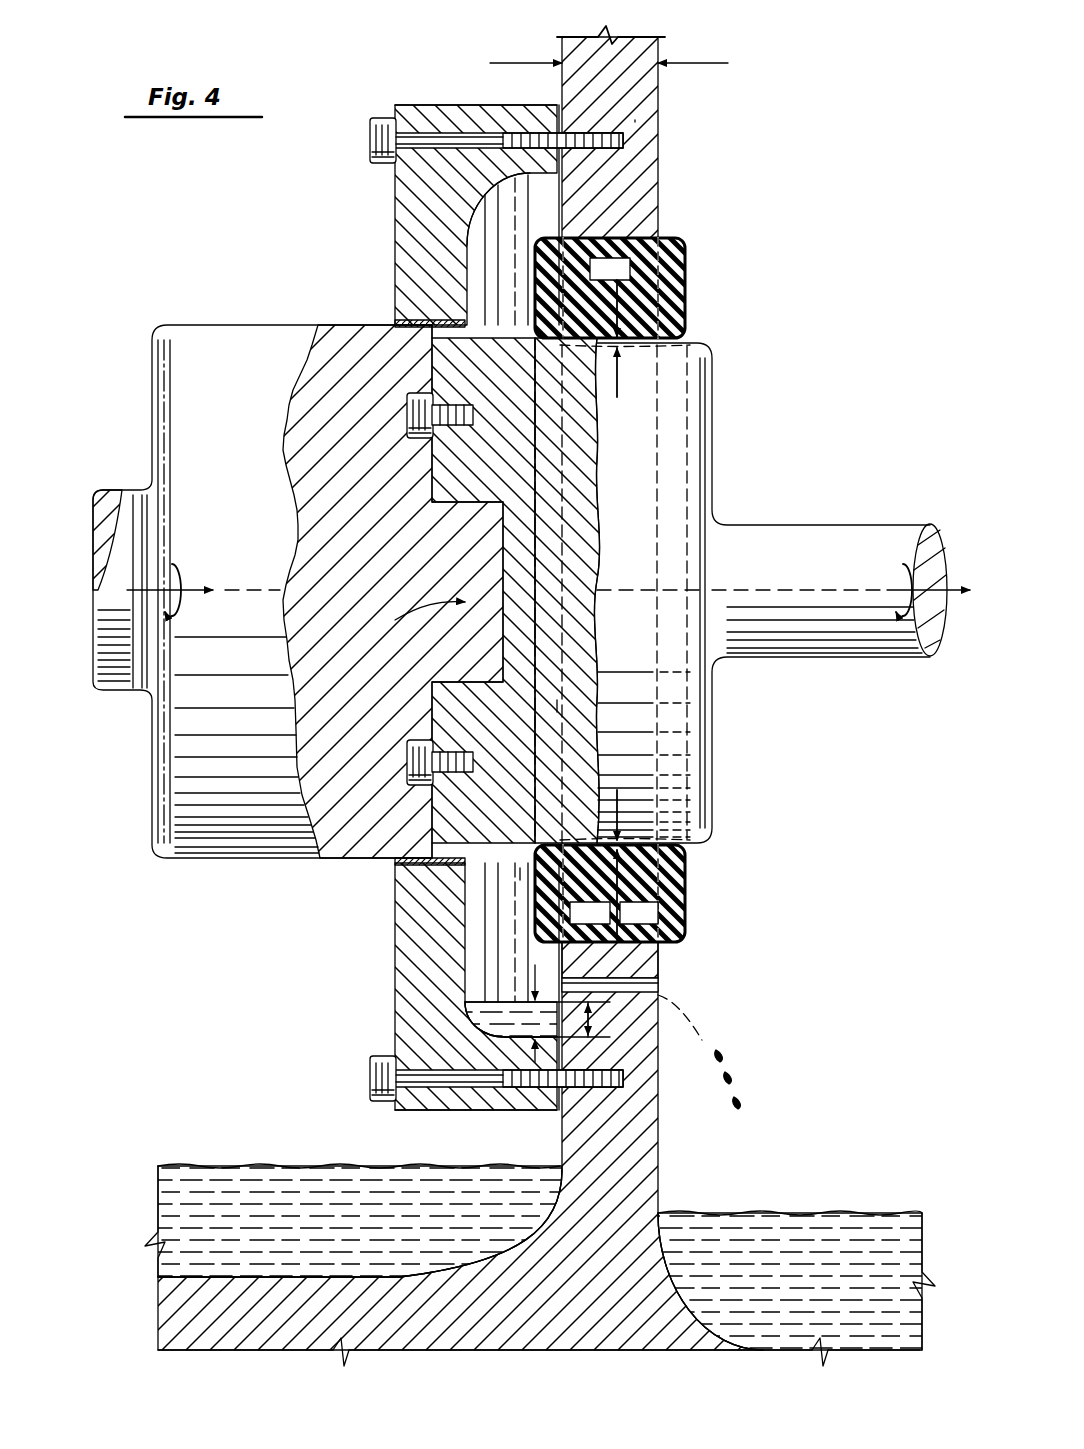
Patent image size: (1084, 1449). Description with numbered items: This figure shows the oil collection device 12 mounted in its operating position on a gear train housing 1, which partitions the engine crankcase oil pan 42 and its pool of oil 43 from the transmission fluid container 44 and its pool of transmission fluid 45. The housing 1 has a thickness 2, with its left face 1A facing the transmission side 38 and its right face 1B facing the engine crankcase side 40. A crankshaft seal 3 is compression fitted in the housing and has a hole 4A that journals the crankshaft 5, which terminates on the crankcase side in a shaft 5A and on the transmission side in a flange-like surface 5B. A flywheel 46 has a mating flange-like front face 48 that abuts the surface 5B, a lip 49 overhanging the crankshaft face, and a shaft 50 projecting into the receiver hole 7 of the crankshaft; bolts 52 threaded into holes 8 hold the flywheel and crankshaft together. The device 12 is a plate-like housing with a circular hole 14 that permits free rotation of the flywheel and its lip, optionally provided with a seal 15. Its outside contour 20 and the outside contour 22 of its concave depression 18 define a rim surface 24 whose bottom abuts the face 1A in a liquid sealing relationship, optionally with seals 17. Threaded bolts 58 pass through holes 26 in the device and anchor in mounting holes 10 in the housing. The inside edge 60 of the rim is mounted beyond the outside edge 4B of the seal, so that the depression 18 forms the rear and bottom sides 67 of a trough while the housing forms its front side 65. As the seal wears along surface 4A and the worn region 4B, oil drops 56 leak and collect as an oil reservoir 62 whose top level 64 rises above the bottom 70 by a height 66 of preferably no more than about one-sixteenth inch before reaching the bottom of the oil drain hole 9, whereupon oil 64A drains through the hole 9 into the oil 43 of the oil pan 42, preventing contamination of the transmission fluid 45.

The gear train housing 1 is at (616, 1177).
The front face 1A is at (557, 705).
The rear face 1B is at (660, 128).
The thickness 2 is at (686, 72).
The crankshaft seal 3 is at (688, 266).
The hole 4A is at (600, 597).
The depression 4B is at (630, 238).
The crankshaft 5 is at (630, 581).
The shaft 5A is at (828, 603).
The flange-like surface 5B is at (448, 500).
The receiver hole 7 is at (510, 590).
The threaded holes 8 is at (442, 404).
The oil drain hole 9 is at (660, 988).
The mounting holes 10 is at (593, 140).
The oil collection device 12 is at (420, 608).
The hole 14 is at (428, 868).
The seal 15 is at (412, 298).
The seals 17 is at (558, 122).
The concave depression 18 is at (472, 262).
The outside contour 20 is at (455, 104).
The outside contour of depression 22 is at (545, 174).
The rim surface 24 is at (560, 162).
The holes 26 is at (470, 158).
The transmission side 38 is at (248, 202).
The engine crankcase side 40 is at (830, 202).
The crankcase oil pan 42 is at (710, 1281).
The pool of oil 43 is at (820, 1286).
The transmission fluid container 44 is at (488, 1256).
The transmission fluid 45 is at (283, 1240).
The flywheel 46 is at (233, 413).
The flange-like front face 48 is at (432, 480).
The lip 49 is at (432, 340).
The shaft 50 is at (427, 617).
The bolts 52 is at (405, 592).
The oil drops 56 is at (520, 870).
The threaded bolts 58 is at (370, 140).
The inside edge of rim 60 is at (575, 1048).
The oil reservoir 62 is at (485, 1018).
The top level 64 is at (520, 952).
The oil 64A is at (728, 1062).
The front side 65 is at (570, 954).
The height 66 is at (592, 1020).
The rear and bottom sides 67 is at (465, 998).
The bottom 70 is at (520, 1046).